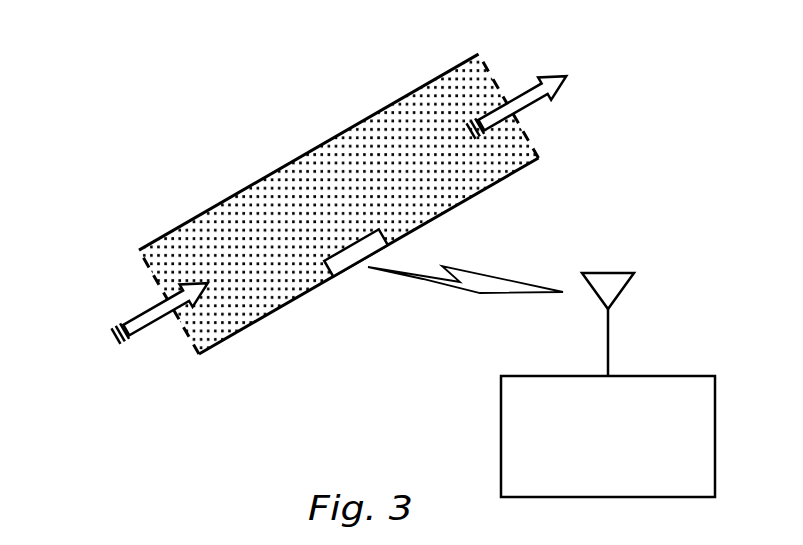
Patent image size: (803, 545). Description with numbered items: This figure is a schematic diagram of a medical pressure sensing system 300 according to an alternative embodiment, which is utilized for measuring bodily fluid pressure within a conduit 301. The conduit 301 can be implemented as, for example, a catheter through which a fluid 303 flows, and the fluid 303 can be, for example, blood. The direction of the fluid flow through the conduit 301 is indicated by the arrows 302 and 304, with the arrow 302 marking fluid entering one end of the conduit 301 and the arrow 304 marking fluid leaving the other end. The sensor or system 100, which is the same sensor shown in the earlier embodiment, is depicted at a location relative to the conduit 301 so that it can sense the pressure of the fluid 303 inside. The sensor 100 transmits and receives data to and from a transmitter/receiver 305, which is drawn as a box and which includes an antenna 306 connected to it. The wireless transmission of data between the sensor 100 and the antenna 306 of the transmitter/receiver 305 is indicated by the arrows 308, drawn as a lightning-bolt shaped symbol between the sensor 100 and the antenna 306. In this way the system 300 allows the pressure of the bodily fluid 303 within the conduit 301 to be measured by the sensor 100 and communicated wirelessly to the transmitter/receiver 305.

The medical pressure sensing system 300 is at (125, 105).
The conduit 301 is at (320, 142).
The arrow 302 is at (142, 332).
The fluid 303 is at (347, 212).
The arrow 304 is at (527, 76).
The sensor or system 100 is at (345, 269).
The arrows 308 is at (483, 272).
The antenna 306 is at (630, 285).
The transmitter/receiver 305 is at (623, 478).